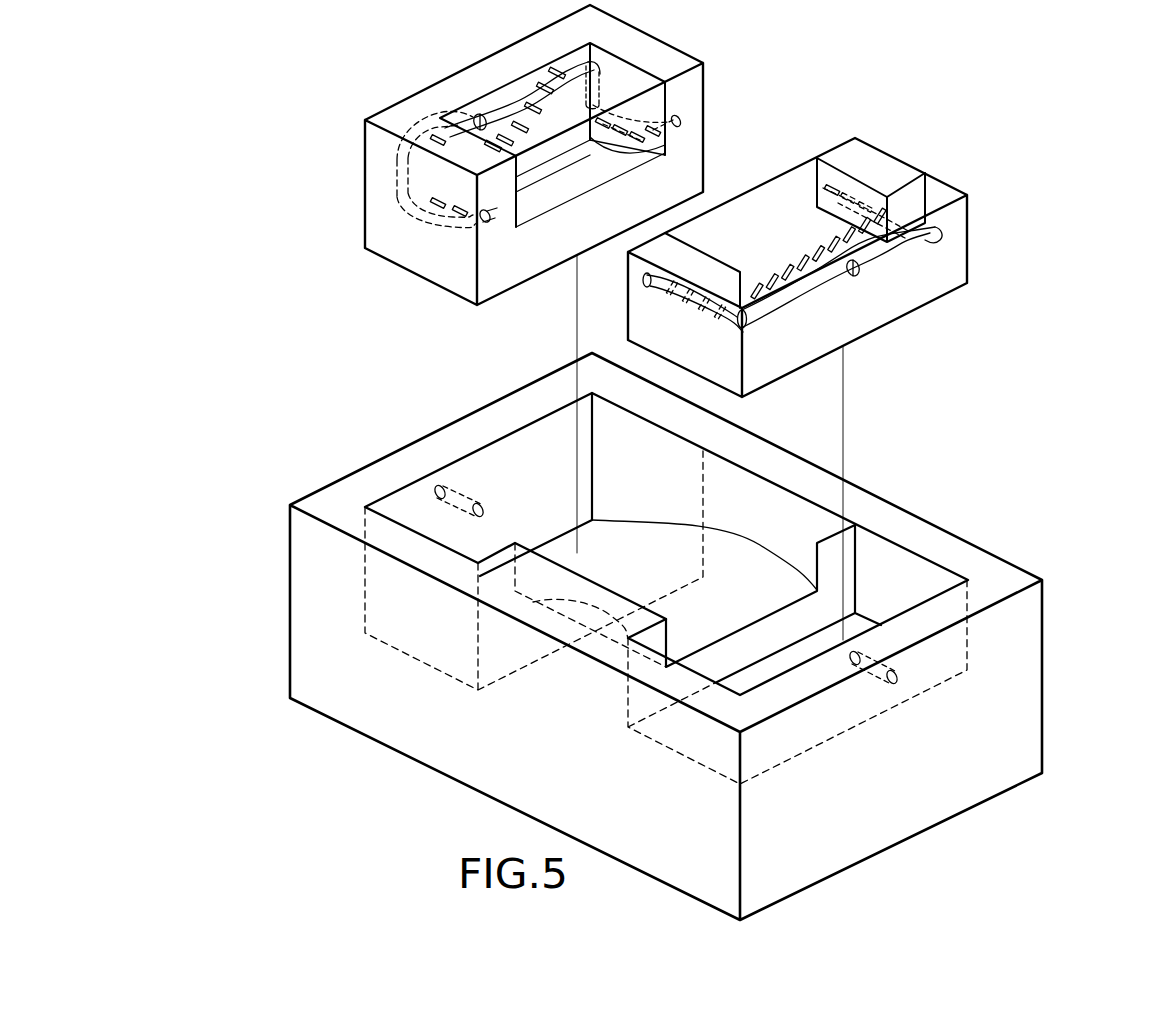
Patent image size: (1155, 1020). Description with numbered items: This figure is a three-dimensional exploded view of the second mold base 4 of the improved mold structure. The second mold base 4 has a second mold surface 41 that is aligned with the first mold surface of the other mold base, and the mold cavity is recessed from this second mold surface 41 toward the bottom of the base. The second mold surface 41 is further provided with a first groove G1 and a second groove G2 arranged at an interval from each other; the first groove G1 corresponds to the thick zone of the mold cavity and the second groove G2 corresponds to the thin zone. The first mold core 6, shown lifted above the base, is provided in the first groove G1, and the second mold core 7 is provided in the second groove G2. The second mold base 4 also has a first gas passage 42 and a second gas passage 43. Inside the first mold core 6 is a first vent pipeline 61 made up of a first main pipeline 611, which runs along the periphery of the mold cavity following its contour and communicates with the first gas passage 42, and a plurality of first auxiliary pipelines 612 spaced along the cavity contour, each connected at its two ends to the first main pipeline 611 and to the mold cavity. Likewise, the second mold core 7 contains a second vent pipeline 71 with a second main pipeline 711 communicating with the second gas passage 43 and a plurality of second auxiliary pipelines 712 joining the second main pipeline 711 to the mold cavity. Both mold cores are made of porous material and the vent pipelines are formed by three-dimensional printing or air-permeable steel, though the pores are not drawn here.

The second mold base 4 is at (355, 698).
The second mold surface 41 is at (402, 467).
The first gas passage 42 is at (436, 505).
The second gas passage 43 is at (897, 675).
The first groove G1 is at (455, 542).
The second groove G2 is at (882, 578).
The first mold core 6 is at (705, 103).
The first vent pipeline 61 is at (275, 90).
The first main pipeline 611 is at (433, 128).
The first auxiliary pipeline 612 is at (435, 198).
The second mold core 7 is at (968, 242).
The second vent pipeline 71 is at (1037, 87).
The second main pipeline 711 is at (887, 207).
The second auxiliary pipeline 712 is at (818, 193).